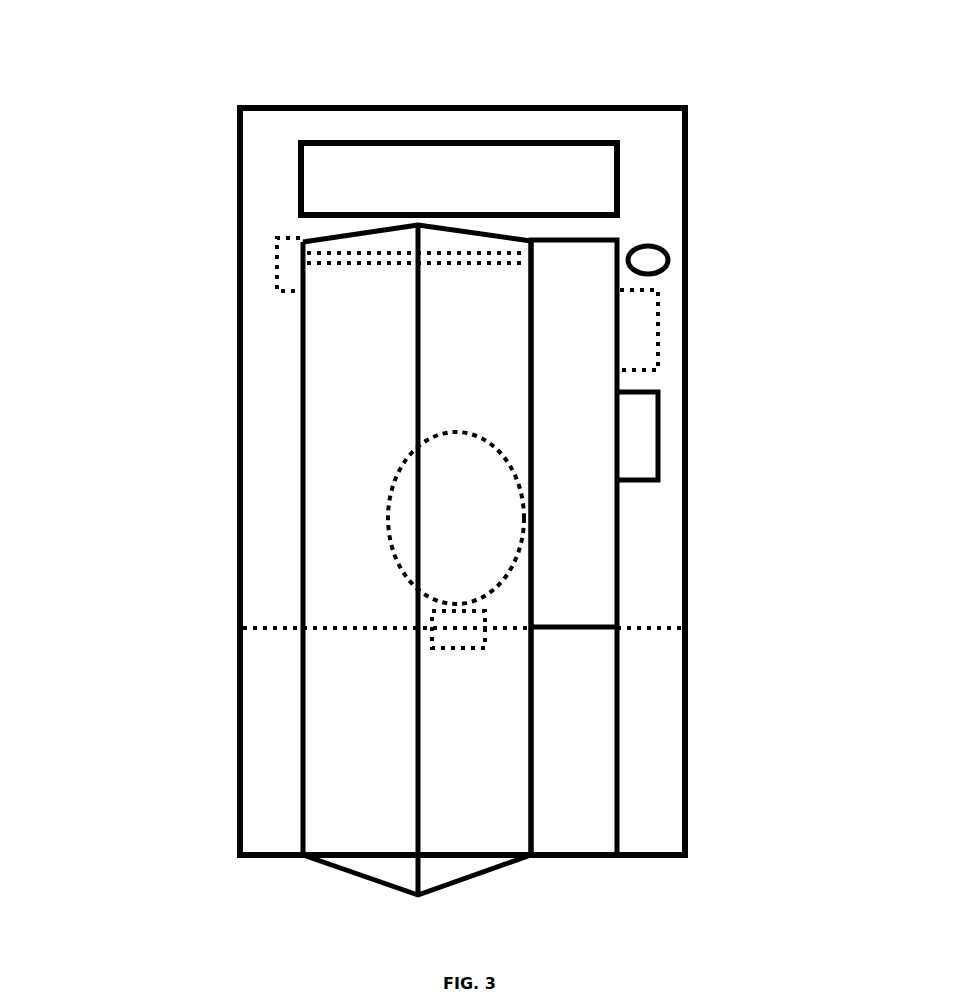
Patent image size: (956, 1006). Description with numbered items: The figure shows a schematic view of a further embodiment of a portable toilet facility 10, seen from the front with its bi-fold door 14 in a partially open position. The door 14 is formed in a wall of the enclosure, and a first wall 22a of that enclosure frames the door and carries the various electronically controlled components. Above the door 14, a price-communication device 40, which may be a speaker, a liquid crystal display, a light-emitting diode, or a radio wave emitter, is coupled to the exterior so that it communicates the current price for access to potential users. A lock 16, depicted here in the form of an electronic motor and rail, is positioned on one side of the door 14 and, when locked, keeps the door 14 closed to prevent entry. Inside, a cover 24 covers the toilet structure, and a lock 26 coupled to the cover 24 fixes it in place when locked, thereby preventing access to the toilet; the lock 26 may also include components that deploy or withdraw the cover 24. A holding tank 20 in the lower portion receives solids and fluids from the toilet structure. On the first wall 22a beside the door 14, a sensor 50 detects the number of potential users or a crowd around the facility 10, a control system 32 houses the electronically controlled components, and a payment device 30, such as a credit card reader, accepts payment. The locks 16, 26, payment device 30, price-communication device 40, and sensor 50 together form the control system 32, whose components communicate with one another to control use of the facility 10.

The portable toilet facility 10 is at (447, 463).
The first wall 22a is at (652, 183).
The price-communication device 40 is at (330, 165).
The door 14 is at (335, 380).
The lock 16 is at (290, 262).
The cover 24 is at (385, 502).
The lock 26 is at (470, 638).
The holding tank 20 is at (347, 726).
The sensor 50 is at (650, 260).
The control system 32 is at (639, 332).
The payment device 30 is at (644, 434).